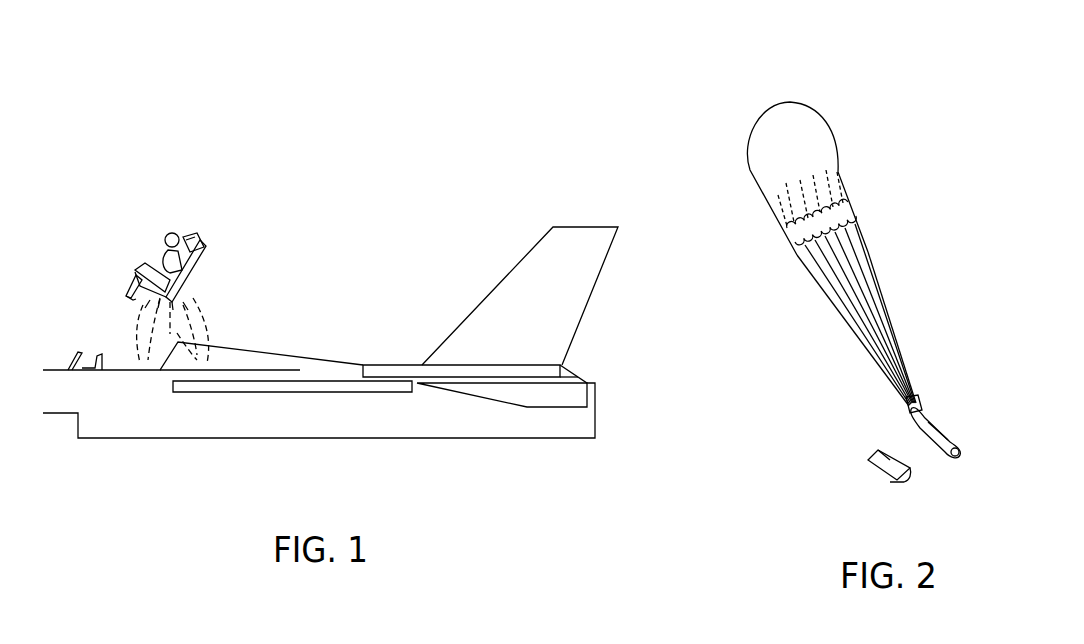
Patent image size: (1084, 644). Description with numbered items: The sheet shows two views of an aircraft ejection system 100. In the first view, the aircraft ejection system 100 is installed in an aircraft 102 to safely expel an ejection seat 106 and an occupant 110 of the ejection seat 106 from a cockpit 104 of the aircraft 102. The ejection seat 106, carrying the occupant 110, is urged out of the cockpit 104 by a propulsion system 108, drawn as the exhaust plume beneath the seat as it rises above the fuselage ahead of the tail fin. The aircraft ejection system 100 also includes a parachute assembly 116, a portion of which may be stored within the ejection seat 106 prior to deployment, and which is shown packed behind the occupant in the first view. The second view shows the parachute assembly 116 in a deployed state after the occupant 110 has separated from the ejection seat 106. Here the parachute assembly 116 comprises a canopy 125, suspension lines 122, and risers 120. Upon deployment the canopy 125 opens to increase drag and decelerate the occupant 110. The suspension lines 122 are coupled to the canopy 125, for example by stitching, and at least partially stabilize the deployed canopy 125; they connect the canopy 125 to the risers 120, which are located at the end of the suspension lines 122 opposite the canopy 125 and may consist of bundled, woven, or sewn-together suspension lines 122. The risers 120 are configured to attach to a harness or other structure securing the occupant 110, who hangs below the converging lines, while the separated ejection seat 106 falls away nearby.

In FIG. 1, the aircraft ejection system 100 is at (262, 283).
In FIG. 1, the aircraft 102 is at (345, 419).
In FIG. 1, the cockpit 104 is at (113, 362).
In FIG. 1, the ejection seat 106 is at (180, 283).
In FIG. 2, the ejection seat 106 is at (875, 468).
In FIG. 1, the propulsion system 108 is at (183, 312).
In FIG. 1, the occupant 110 is at (165, 233).
In FIG. 2, the occupant 110 is at (908, 422).
In FIG. 1, the parachute assembly 116 is at (204, 241).
In FIG. 2, the parachute assembly 116 is at (824, 233).
In FIG. 2, the risers 120 is at (915, 376).
In FIG. 2, the suspension lines 122 is at (870, 250).
In FIG. 2, the canopy 125 is at (797, 153).